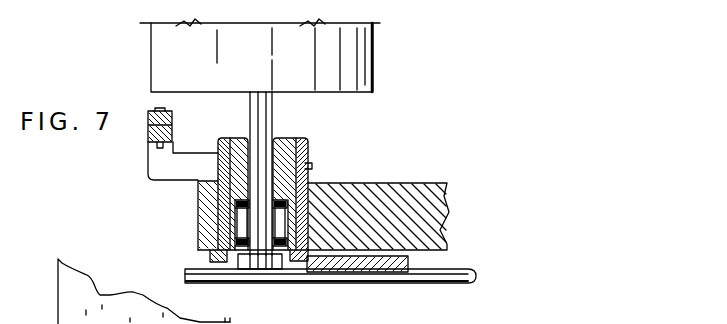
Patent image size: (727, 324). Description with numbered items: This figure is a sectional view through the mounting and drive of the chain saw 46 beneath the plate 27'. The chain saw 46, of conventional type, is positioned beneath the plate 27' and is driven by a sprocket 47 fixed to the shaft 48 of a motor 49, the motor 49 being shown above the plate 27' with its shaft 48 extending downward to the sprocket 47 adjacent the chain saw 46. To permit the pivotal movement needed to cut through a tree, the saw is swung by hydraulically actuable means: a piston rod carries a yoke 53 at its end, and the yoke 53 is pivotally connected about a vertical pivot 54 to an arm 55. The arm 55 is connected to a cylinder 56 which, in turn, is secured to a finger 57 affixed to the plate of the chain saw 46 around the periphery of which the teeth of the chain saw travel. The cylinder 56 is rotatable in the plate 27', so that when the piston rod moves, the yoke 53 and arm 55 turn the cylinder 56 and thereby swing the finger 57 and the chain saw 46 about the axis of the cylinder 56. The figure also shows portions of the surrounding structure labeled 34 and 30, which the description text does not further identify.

The motor 49 is at (350, 53).
The shaft 48 is at (262, 108).
The yoke 53 is at (174, 115).
The vertical pivot 54 is at (160, 110).
The arm 55 is at (163, 168).
The cylinder 56 is at (311, 182).
The plate 27' is at (378, 196).
The sprocket 47 is at (259, 264).
The chain saw 46 is at (368, 281).
The finger 57 is at (382, 264).
The support 34 is at (12, 323).
The housing 30 is at (129, 291).